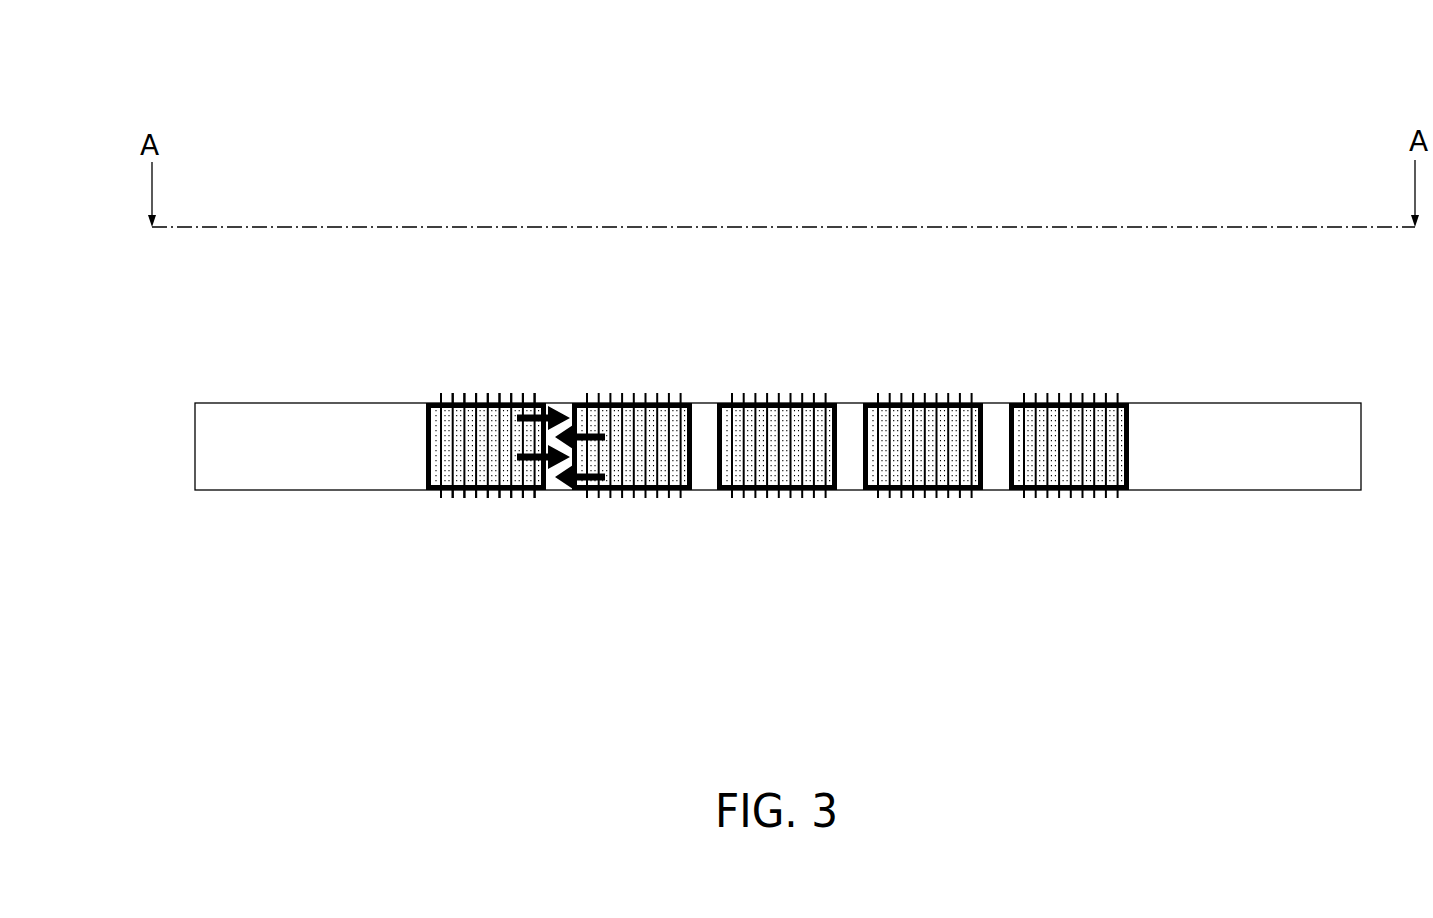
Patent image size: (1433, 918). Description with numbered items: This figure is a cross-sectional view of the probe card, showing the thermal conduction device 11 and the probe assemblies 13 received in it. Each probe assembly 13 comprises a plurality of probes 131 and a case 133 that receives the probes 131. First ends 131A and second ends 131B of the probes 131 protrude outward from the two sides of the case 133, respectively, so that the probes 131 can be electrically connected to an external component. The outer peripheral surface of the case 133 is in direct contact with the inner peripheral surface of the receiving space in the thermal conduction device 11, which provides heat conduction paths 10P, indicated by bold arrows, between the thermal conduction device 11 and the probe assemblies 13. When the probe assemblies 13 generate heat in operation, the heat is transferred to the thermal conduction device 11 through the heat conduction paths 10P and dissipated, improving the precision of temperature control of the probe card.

The thermal conduction device 11 is at (195, 452).
The probe assembly 13 is at (692, 451).
The probes 131 is at (456, 454).
The first ends 131A is at (445, 392).
The second ends 131B is at (443, 503).
The case 133 is at (410, 402).
The heat conduction paths 10P is at (543, 405).